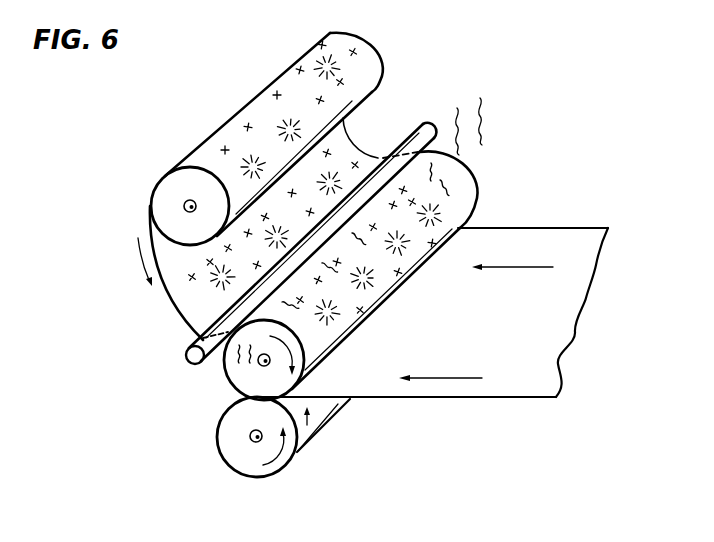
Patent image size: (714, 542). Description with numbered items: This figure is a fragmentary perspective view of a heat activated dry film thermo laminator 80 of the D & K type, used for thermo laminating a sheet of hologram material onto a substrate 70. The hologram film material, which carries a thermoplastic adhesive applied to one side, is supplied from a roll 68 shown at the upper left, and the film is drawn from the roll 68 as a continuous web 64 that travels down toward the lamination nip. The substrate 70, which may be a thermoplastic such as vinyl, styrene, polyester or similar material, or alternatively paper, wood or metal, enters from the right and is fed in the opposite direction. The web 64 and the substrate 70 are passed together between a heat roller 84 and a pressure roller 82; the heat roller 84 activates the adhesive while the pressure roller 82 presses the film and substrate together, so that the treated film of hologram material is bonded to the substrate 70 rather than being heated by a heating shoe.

The web 64 is at (173, 307).
The roll 68 is at (167, 203).
The substrate 70 is at (401, 363).
The laminator 80 is at (142, 440).
The pressure roller 82 is at (231, 456).
The heat roller 84 is at (222, 368).